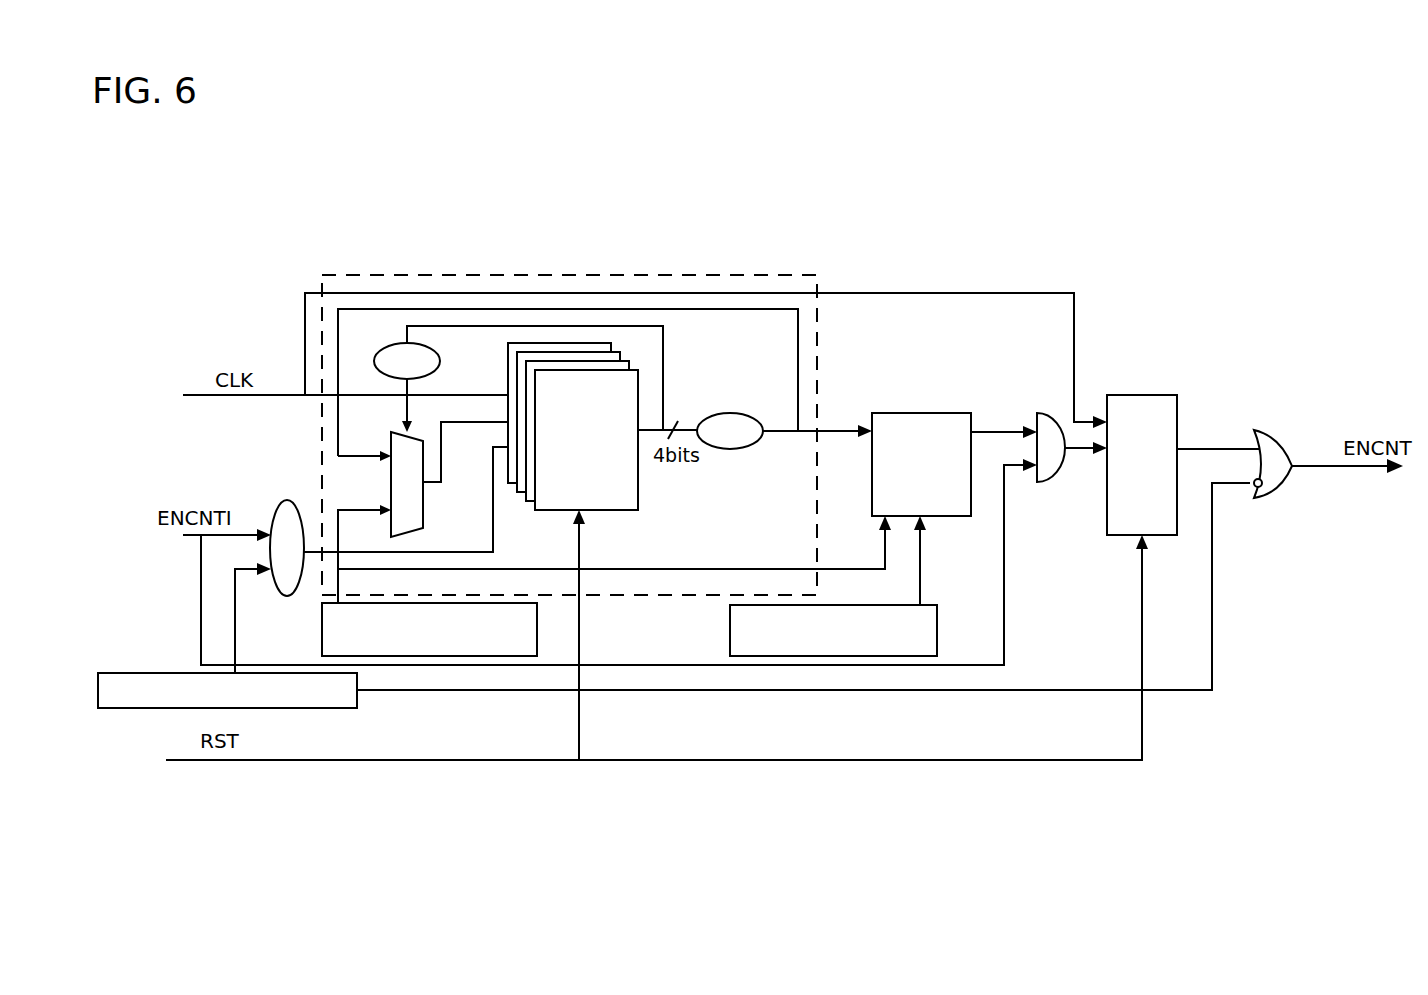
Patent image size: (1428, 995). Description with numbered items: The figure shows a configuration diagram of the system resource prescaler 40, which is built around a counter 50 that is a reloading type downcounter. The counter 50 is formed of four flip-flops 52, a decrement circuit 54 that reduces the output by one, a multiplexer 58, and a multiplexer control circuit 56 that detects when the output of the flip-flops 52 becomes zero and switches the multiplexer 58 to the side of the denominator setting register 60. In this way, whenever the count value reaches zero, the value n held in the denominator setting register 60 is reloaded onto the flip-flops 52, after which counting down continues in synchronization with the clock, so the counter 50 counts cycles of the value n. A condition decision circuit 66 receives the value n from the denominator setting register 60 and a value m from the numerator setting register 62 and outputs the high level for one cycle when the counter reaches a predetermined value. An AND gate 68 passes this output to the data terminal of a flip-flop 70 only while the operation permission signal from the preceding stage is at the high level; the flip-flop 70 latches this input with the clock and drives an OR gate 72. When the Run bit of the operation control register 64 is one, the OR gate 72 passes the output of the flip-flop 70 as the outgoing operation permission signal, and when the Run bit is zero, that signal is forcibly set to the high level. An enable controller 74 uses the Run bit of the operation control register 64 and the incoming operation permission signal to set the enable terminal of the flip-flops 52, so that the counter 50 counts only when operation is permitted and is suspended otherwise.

The system resource prescaler 40 is at (779, 226).
The counter 50 is at (585, 596).
The flip-flops 52 is at (642, 498).
The decrement circuit 54 is at (740, 411).
The multiplexer control circuit 56 is at (444, 362).
The multiplexer 58 is at (425, 526).
The denominator setting register 60 is at (321, 641).
The numerator setting register 62 is at (729, 654).
The operation control register 64 is at (227, 675).
The condition decision circuit 66 is at (921, 434).
The AND gate 68 is at (1050, 431).
The flip-flop 70 is at (1140, 450).
The OR gate 72 is at (1269, 452).
The enable controller 74 is at (285, 532).